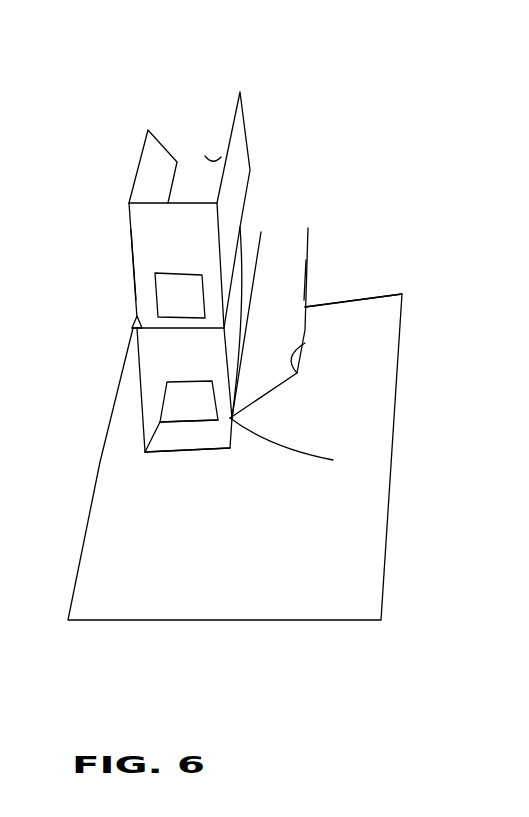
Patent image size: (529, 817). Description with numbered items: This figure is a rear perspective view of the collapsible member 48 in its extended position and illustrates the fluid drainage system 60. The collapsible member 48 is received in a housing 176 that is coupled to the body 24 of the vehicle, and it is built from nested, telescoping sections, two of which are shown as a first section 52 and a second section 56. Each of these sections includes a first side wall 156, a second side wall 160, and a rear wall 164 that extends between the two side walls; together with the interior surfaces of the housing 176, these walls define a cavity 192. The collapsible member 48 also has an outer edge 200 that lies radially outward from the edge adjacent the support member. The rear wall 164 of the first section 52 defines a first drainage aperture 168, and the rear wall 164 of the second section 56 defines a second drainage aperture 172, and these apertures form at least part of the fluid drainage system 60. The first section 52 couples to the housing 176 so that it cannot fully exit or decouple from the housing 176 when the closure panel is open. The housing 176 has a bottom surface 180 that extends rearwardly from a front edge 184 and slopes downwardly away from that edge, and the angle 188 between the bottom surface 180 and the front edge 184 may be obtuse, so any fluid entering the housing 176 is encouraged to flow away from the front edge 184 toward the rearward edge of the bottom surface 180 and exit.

The body 24 is at (330, 528).
The collapsible member 48 is at (320, 228).
The first section 52 is at (140, 381).
The second section 56 is at (125, 222).
The fluid drainage system 60 is at (210, 277).
The first side wall 156 is at (143, 167).
The second side wall 160 is at (238, 160).
The rear wall 164 is at (138, 262).
The first drainage aperture 168 is at (183, 272).
The second drainage aperture 172 is at (188, 402).
The housing 176 is at (292, 275).
The bottom surface 180 is at (188, 450).
The front edge 184 is at (305, 317).
The angle 188 is at (297, 355).
The cavity 192 is at (214, 154).
The outer edge 200 is at (168, 367).